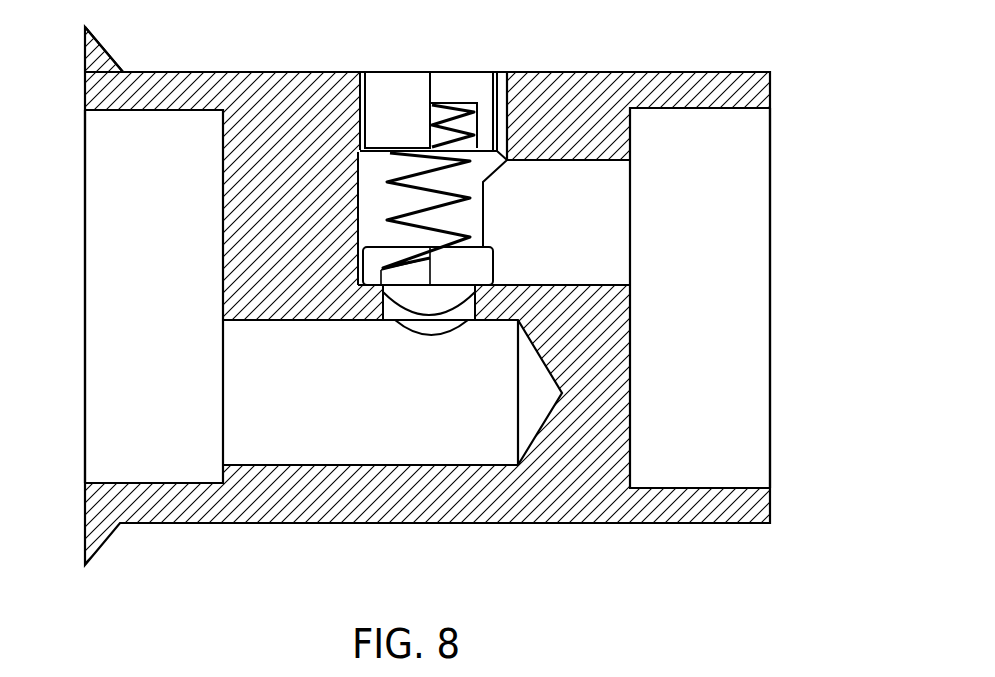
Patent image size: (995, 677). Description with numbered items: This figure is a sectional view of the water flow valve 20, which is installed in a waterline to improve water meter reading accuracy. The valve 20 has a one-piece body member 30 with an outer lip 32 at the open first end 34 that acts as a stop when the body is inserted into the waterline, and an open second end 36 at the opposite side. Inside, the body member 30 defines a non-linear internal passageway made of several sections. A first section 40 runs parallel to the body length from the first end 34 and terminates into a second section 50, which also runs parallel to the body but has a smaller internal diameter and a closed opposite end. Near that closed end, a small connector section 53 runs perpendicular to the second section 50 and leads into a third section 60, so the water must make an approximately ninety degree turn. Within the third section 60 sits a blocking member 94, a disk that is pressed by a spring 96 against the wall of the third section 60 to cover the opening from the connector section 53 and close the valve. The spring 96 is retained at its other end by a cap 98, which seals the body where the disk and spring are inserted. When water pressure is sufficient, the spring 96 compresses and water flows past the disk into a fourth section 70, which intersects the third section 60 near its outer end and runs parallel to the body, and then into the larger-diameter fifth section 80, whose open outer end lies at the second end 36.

The valve 20 is at (137, 532).
The body member 30 is at (595, 86).
The lip 32 is at (109, 50).
The first end 34 is at (85, 365).
The second end 36 is at (770, 415).
The first section 40 is at (113, 257).
The second section 50 is at (420, 440).
The connector section 53 is at (393, 315).
The third section 60 is at (360, 130).
The fourth section 70 is at (583, 183).
The fifth section 80 is at (755, 470).
The blocking member 94 is at (493, 262).
The spring 96 is at (455, 103).
The cap 98 is at (392, 95).